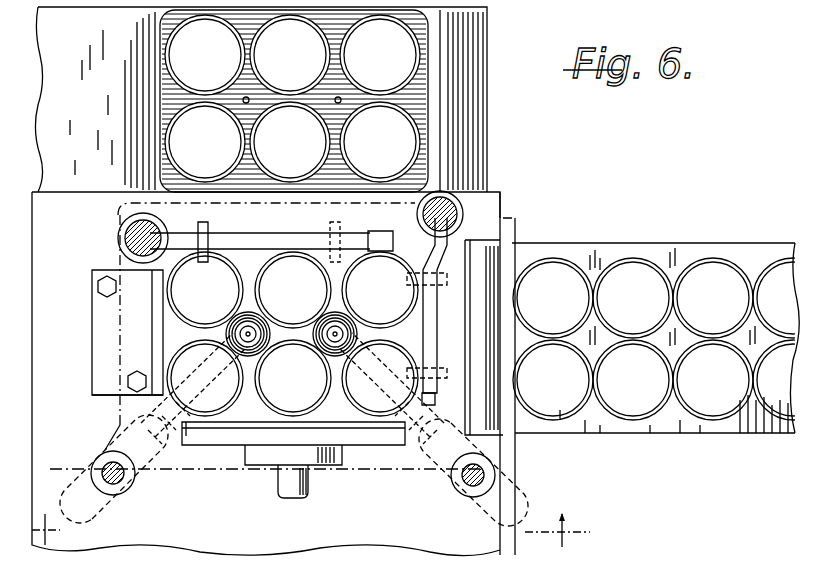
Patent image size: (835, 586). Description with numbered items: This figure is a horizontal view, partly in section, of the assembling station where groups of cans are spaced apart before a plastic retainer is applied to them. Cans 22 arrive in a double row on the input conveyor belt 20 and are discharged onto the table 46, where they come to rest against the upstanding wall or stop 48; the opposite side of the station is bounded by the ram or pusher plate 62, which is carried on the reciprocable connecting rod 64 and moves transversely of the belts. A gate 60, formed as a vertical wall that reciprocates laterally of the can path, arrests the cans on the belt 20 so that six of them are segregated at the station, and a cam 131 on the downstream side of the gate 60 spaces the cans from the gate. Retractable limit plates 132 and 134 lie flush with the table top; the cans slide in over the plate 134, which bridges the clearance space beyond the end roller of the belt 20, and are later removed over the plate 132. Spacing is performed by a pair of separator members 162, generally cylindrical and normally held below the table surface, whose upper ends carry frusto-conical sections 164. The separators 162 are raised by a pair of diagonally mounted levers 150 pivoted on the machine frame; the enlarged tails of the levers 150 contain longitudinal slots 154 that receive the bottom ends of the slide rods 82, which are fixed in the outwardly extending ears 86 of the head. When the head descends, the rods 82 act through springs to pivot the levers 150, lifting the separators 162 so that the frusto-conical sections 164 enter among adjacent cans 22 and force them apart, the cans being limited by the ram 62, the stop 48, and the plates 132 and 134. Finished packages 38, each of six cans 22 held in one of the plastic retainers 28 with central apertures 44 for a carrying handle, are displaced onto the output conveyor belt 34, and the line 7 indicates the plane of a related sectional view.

The line 7— 7 is at (311, 530).
The conveyor belt 20 is at (690, 252).
The cans 22 is at (428, 100).
The plastic retainers 28 is at (170, 105).
The conveyor belt 34 is at (90, 93).
The packages 38 is at (432, 118).
The apertures 44 is at (316, 135).
The table 46 is at (72, 371).
The upstanding wall or stop 48 is at (158, 305).
The gate 60 is at (507, 233).
The ram or pusher plate 62 is at (218, 437).
The connecting rod 64 is at (305, 487).
The slide rods 82 is at (130, 235).
The ears 86 is at (105, 450).
The cam 131 is at (482, 240).
The limit plate 132 is at (298, 238).
The limit plate 134 is at (455, 306).
The levers 150 is at (417, 505).
The longitudinal slots 154 is at (65, 533).
The separator members 162 is at (215, 335).
The frusto-conical sections 164 is at (325, 331).